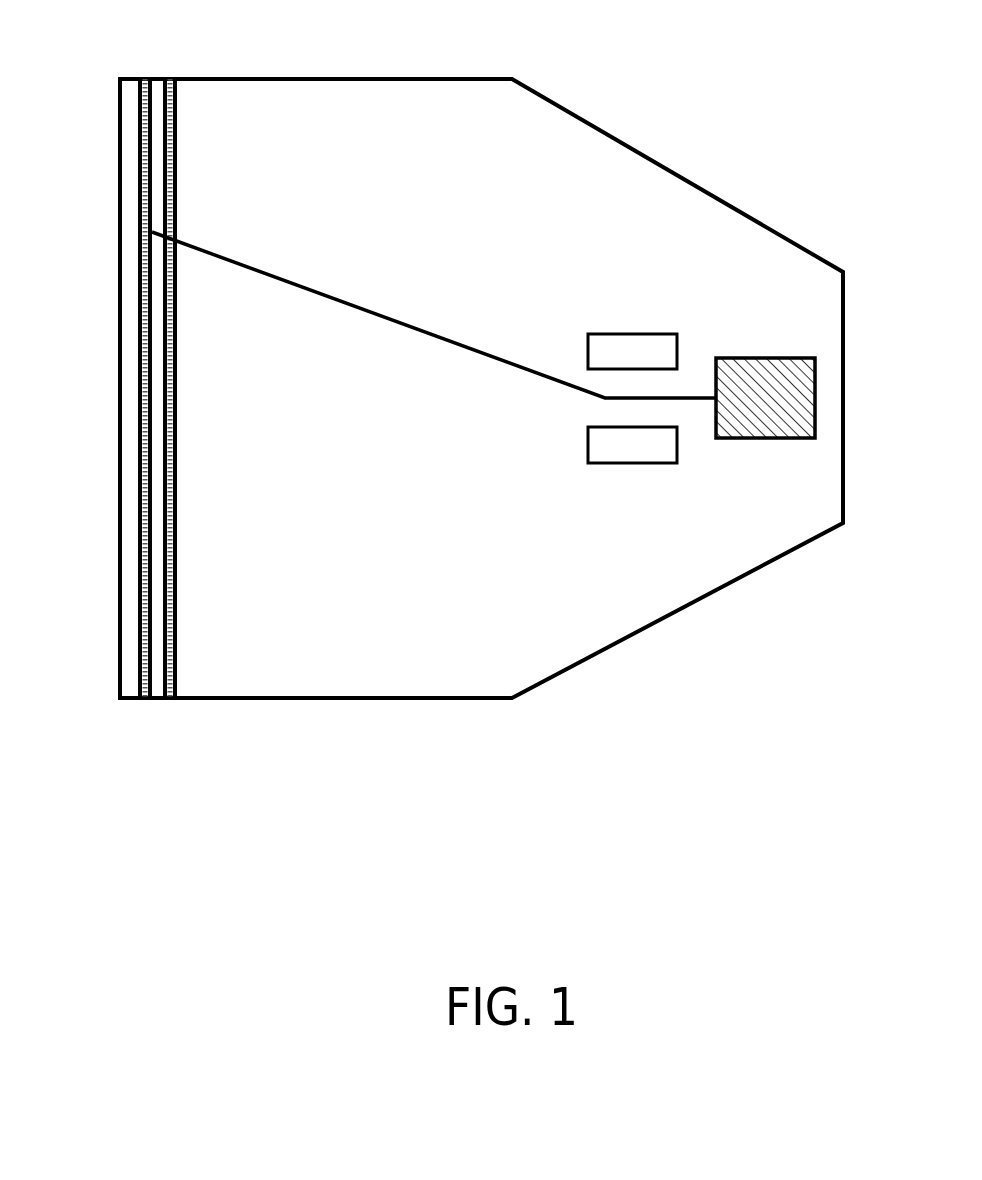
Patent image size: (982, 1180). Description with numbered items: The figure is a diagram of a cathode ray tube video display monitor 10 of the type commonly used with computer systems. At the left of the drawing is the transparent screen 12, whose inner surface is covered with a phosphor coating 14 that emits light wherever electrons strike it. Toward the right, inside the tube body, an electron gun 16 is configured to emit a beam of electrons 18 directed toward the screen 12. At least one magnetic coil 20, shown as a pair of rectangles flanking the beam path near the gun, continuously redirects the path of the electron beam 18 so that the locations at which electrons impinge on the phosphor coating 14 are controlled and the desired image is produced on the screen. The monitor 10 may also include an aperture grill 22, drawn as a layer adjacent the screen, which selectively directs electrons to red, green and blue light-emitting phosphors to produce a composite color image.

The cathode ray tube video display monitor 10 is at (760, 659).
The transparent screen 12 is at (120, 300).
The phosphor coating 14 is at (141, 607).
The electron gun 16 is at (815, 403).
The beam of electrons 18 is at (352, 303).
The magnetic coil 20 is at (630, 334).
The aperture grill 22 is at (176, 108).